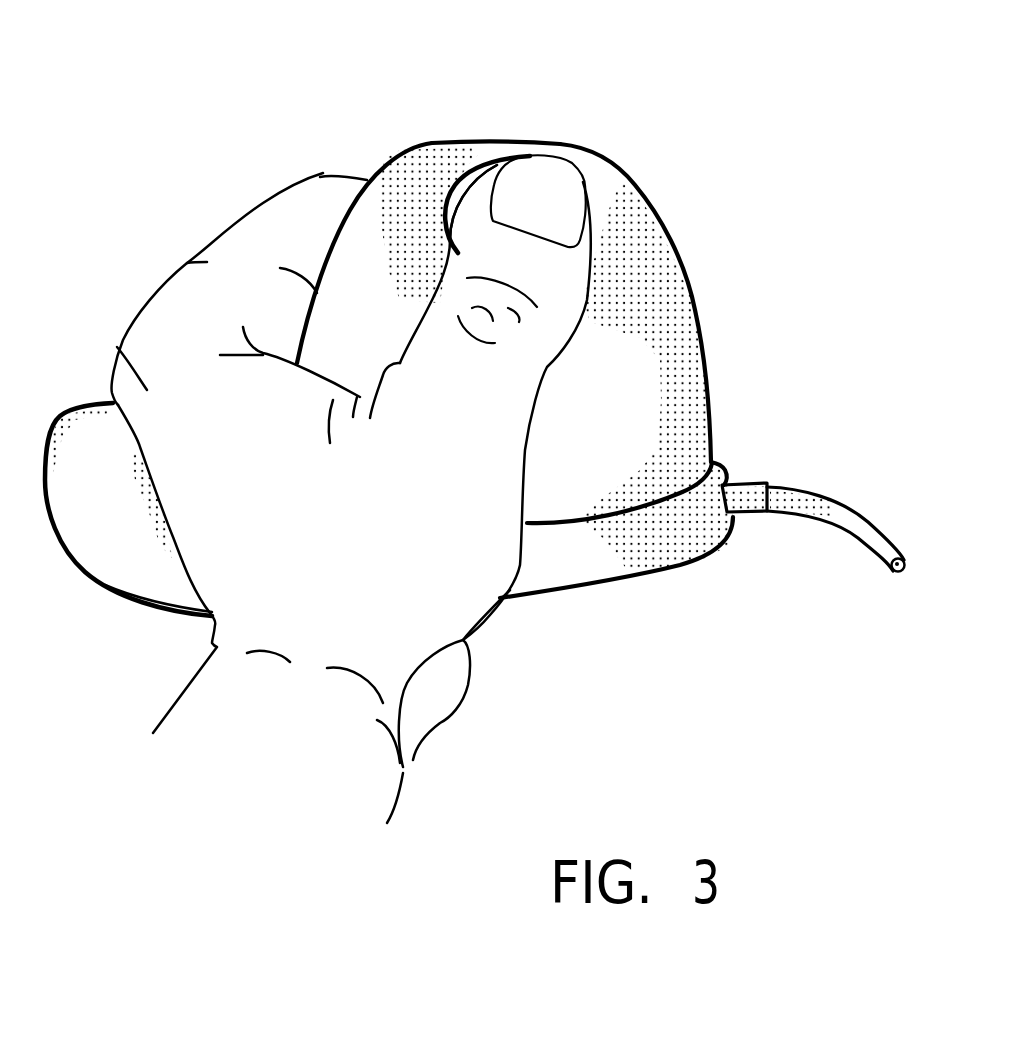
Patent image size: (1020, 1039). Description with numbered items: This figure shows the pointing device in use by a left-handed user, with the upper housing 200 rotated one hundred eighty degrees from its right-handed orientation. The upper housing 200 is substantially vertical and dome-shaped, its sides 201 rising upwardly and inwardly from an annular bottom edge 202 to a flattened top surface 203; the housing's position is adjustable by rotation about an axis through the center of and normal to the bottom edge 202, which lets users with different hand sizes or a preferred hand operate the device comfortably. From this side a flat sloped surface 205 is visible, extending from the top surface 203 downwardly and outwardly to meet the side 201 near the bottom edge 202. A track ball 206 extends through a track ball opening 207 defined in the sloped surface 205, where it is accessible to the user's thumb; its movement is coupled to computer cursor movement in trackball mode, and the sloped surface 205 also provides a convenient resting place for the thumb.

The upper housing 200 is at (662, 337).
The side 201 is at (567, 493).
The bottom edge 202 is at (670, 508).
The top surface 203 is at (454, 147).
The sloped surface 205 is at (612, 195).
The track ball 206 is at (470, 197).
The track ball opening 207 is at (447, 207).